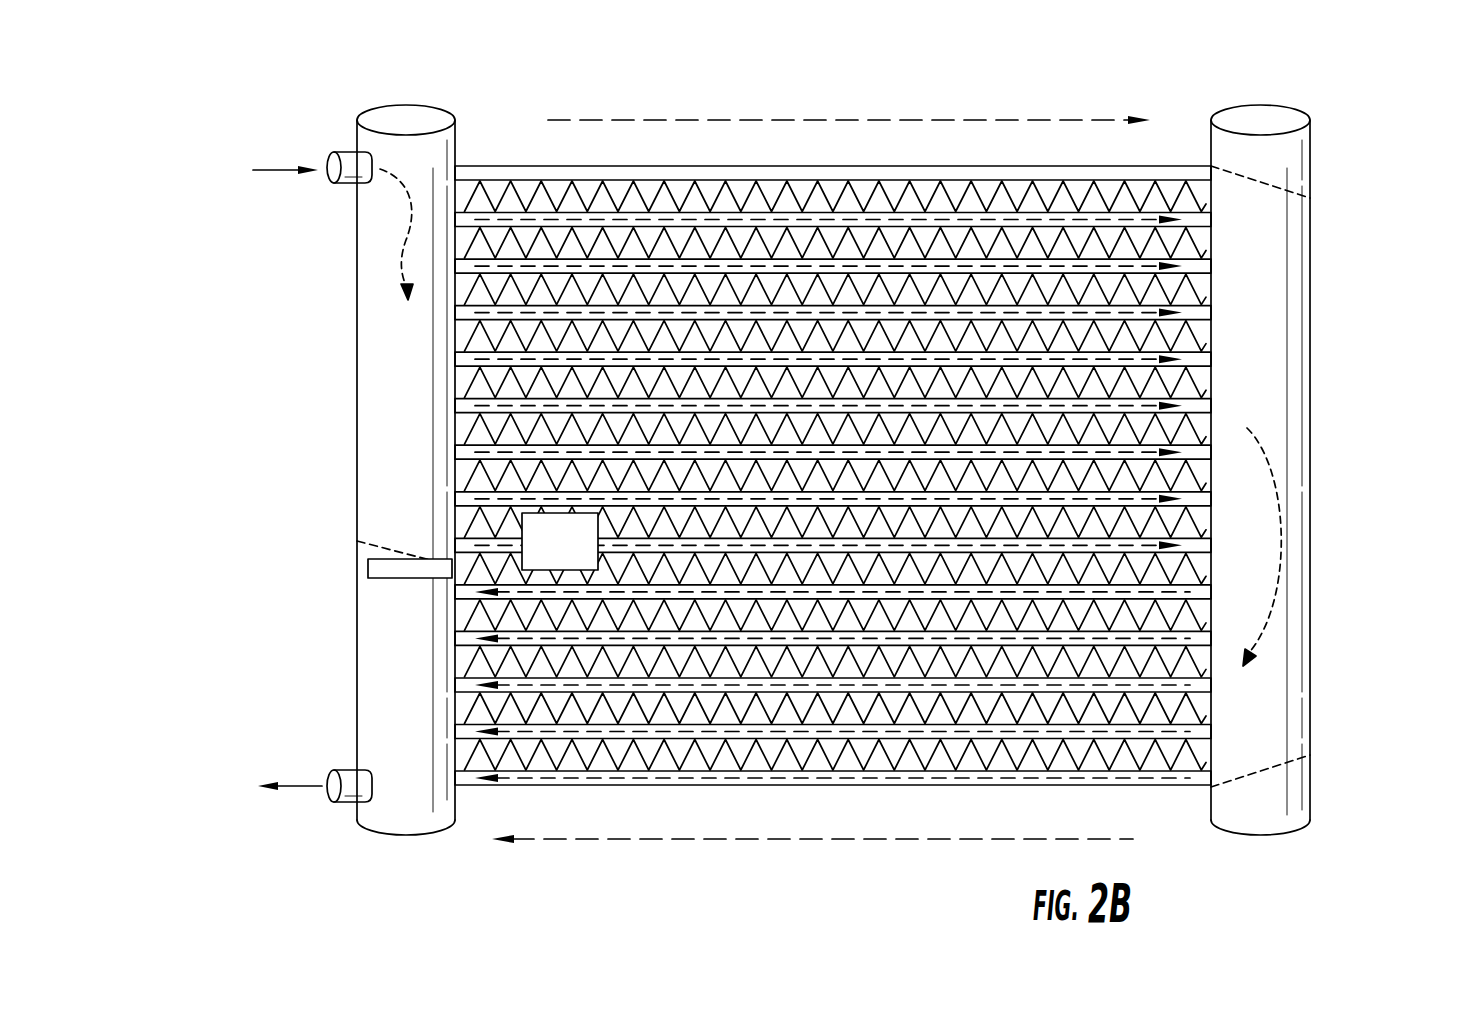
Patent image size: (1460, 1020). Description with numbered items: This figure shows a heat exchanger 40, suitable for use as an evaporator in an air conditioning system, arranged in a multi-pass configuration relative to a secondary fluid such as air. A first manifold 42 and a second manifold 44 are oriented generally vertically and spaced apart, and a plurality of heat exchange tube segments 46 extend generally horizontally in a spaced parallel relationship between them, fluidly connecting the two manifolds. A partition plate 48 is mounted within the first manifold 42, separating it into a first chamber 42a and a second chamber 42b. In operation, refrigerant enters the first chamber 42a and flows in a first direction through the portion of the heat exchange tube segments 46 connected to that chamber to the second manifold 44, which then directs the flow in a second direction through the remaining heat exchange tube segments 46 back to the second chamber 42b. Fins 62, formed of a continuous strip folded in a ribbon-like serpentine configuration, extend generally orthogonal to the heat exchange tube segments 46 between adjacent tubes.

The heat exchanger 40 is at (766, 459).
The first manifold 42 is at (346, 470).
The first chamber 42a is at (406, 340).
The second chamber 42b is at (406, 699).
The second manifold 44 is at (1284, 308).
The heat exchange tube segments 46 is at (605, 273).
The partition plate 48 is at (363, 568).
The fins 62 is at (714, 568).